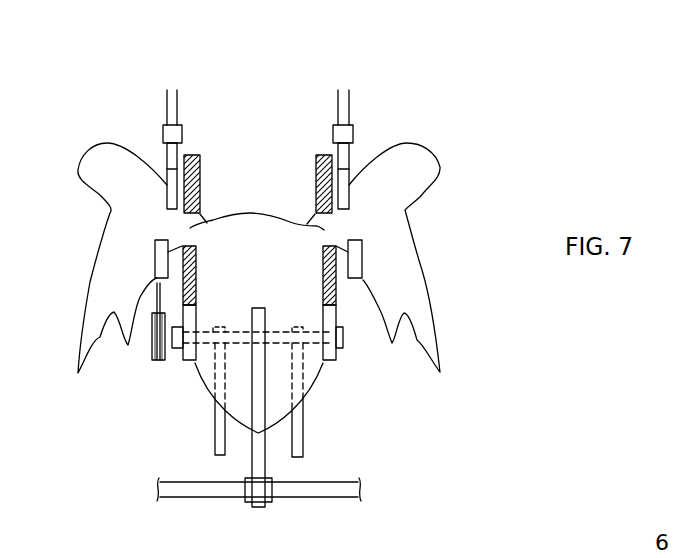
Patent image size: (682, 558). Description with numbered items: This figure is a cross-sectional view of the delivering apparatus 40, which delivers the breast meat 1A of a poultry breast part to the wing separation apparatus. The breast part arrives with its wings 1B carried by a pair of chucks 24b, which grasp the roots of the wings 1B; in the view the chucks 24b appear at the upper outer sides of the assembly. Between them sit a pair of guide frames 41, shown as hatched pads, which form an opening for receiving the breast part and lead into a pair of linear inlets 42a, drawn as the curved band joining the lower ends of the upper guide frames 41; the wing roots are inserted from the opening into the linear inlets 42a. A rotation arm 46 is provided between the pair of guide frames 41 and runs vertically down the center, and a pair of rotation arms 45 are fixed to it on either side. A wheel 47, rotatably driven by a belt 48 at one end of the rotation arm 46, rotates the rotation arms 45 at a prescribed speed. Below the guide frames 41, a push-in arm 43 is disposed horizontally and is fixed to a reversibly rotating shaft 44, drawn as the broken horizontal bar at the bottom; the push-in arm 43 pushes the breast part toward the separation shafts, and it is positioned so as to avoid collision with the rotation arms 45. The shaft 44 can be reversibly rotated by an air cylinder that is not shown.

The delivering apparatus 40 is at (257, 82).
The breast meat 1A is at (310, 364).
The wings 1B is at (87, 165).
The chucks 24b is at (163, 133).
The guide frames 41 is at (204, 158).
The linear inlets 42a is at (310, 227).
The push-in arm 43 is at (257, 468).
The reversibly rotating shaft 44 is at (200, 492).
The rotation arms 45 is at (216, 432).
The rotation arm 46 is at (275, 330).
The wheel 47 is at (152, 358).
The belt 48 is at (156, 306).